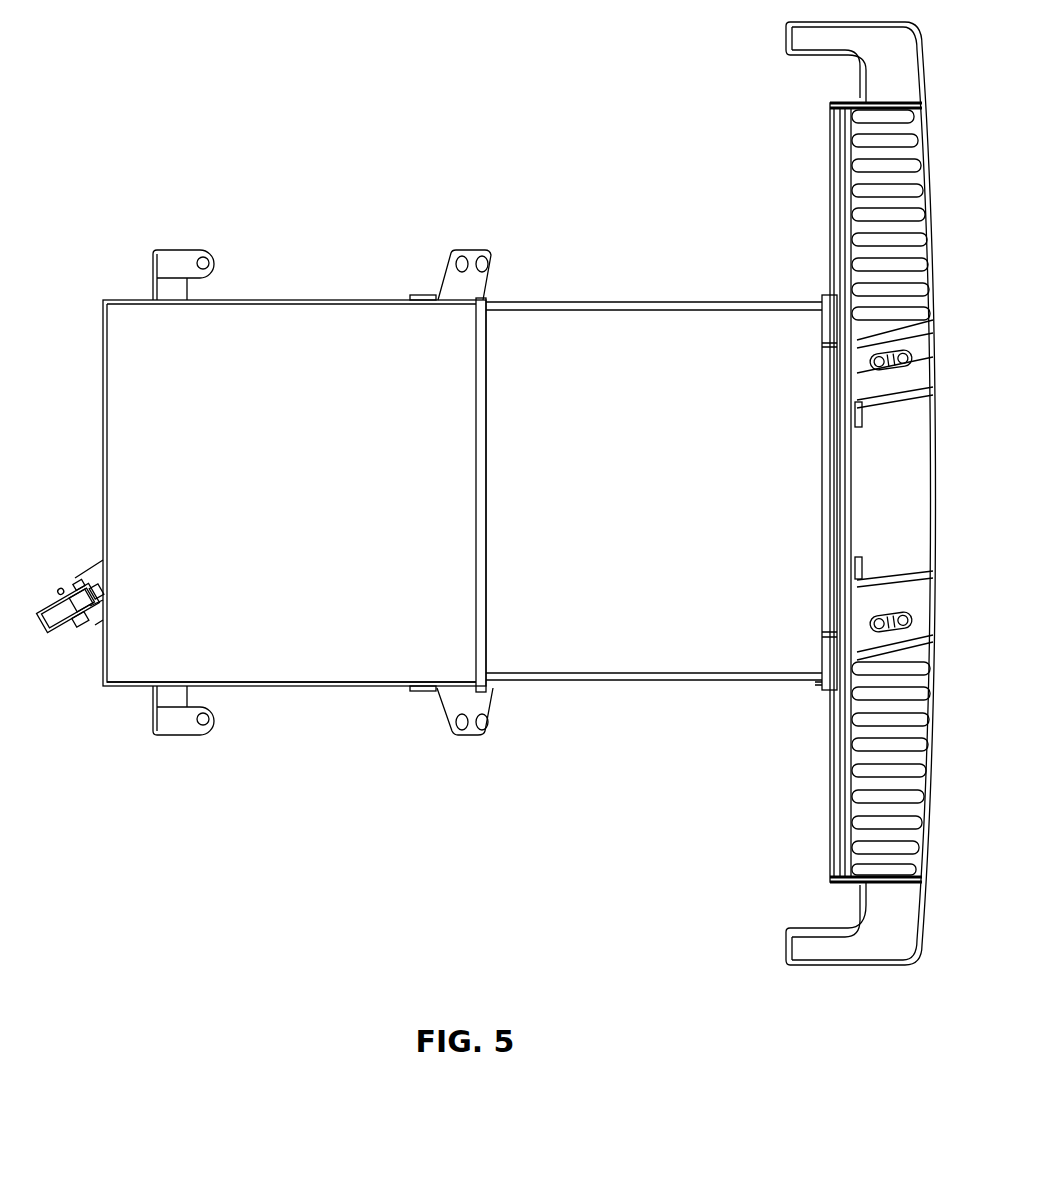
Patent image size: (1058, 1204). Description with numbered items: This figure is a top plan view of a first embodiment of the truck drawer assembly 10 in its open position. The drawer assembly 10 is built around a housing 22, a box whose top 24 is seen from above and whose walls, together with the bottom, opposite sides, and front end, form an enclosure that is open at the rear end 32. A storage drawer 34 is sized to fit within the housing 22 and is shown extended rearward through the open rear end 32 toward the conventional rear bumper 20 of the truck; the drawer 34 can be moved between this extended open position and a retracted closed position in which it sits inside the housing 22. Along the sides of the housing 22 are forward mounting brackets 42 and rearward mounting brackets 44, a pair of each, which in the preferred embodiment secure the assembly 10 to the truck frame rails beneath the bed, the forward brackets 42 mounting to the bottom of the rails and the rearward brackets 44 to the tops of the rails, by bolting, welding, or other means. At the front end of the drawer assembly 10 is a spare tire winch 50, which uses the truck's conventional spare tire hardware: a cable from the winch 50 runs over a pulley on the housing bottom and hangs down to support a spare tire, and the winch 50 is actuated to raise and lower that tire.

The drawer assembly 10 is at (508, 174).
The rear bumper 20 is at (878, 513).
The housing 22 is at (283, 340).
The top 24 is at (348, 655).
The rear end 32 is at (490, 574).
The storage drawer 34 is at (635, 340).
The forward mounting brackets 42 is at (180, 263).
The rearward mounting brackets 44 is at (472, 263).
The spare tire winch 50 is at (48, 618).